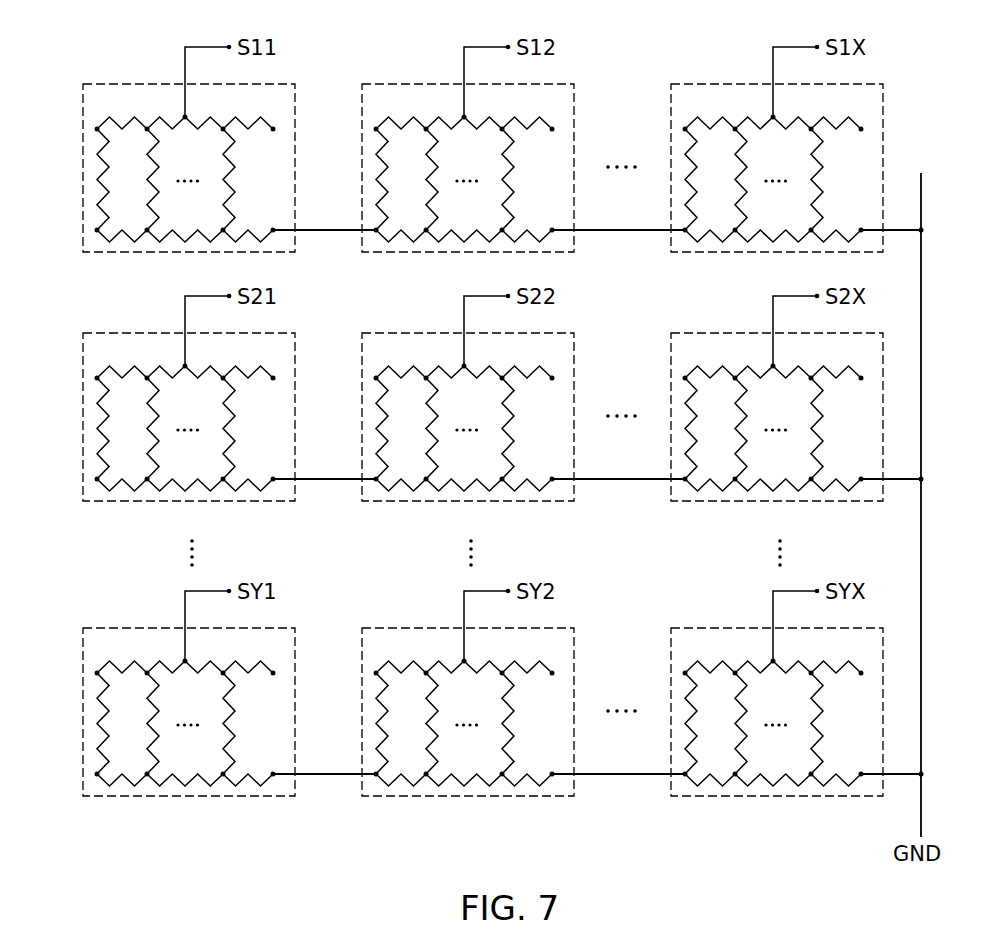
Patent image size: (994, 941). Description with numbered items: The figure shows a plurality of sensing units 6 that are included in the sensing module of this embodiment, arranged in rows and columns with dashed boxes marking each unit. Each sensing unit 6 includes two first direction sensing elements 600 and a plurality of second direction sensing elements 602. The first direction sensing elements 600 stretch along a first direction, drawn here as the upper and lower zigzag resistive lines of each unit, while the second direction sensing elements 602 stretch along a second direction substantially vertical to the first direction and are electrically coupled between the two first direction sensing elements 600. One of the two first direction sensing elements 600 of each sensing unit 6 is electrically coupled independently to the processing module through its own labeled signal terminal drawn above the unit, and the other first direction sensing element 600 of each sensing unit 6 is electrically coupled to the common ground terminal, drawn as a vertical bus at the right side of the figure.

The sensing unit 6 is at (483, 440).
The first direction sensing element 600 is at (453, 367).
The second direction sensing element 602 is at (364, 451).